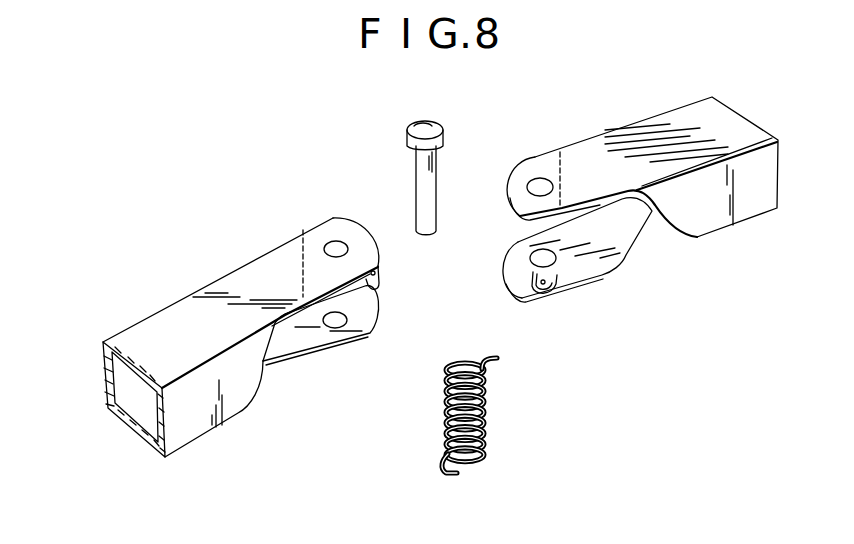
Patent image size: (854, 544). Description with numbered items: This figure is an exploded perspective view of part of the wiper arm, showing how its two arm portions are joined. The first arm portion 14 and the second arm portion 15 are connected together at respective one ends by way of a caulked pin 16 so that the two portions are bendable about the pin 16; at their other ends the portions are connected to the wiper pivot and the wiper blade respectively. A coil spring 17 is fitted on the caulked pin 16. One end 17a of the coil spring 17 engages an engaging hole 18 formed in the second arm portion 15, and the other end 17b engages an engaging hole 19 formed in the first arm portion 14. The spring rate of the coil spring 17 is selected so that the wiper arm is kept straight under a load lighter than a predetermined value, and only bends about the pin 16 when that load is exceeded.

The first arm portion 14 is at (587, 160).
The second arm portion 15 is at (182, 306).
The caulked pin 16 is at (408, 130).
The coil spring 17 is at (441, 417).
The one end of coil spring 17a is at (497, 356).
The other end of coil spring 17b is at (445, 478).
The engaging hole 18 is at (376, 272).
The engaging hole 19 is at (545, 289).